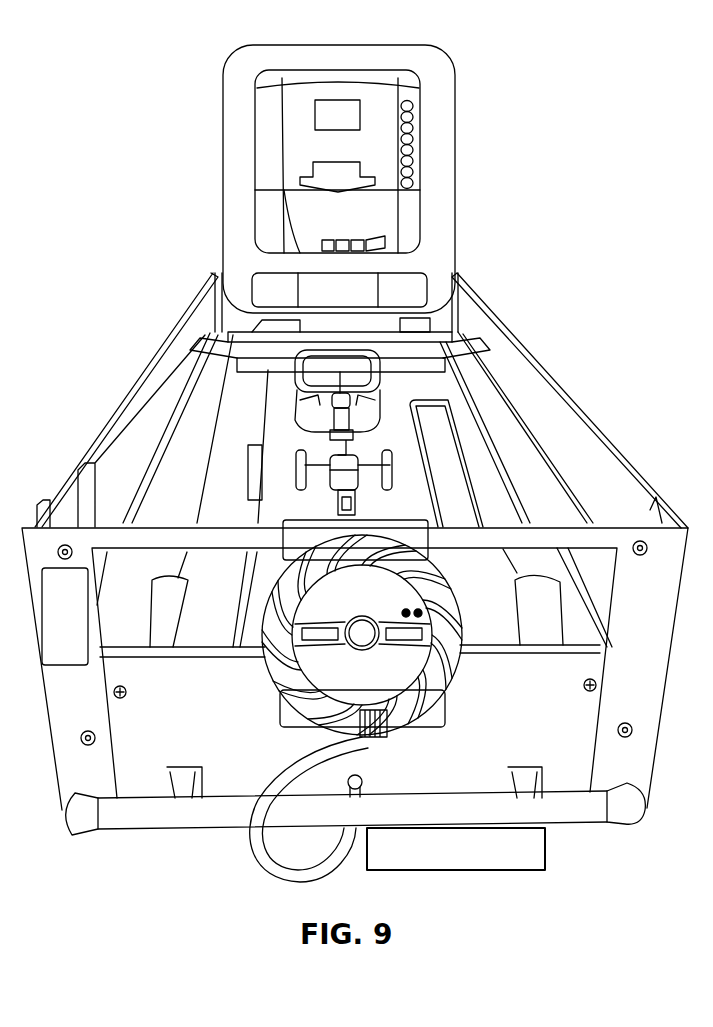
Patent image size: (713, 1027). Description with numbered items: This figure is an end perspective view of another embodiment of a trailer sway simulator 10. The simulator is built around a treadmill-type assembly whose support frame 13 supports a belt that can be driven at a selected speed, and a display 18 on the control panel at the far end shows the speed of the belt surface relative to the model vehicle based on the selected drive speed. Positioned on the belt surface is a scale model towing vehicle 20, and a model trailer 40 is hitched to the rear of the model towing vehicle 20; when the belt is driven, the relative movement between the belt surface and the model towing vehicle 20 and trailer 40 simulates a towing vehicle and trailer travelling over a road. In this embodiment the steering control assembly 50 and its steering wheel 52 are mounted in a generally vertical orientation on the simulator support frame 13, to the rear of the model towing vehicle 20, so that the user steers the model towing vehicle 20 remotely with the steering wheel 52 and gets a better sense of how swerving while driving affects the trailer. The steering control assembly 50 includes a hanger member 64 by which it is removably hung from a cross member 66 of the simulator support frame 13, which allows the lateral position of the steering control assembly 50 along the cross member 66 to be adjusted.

The trailer sway simulator 10 is at (531, 165).
The support frame 13 is at (666, 680).
The display 18 is at (432, 57).
The model towing vehicle 20 is at (340, 378).
The model trailer 40 is at (345, 432).
The steering control assembly 50 is at (444, 529).
The steering wheel 52 is at (437, 585).
The hanger member 64 is at (300, 540).
The cross member 66 is at (117, 535).